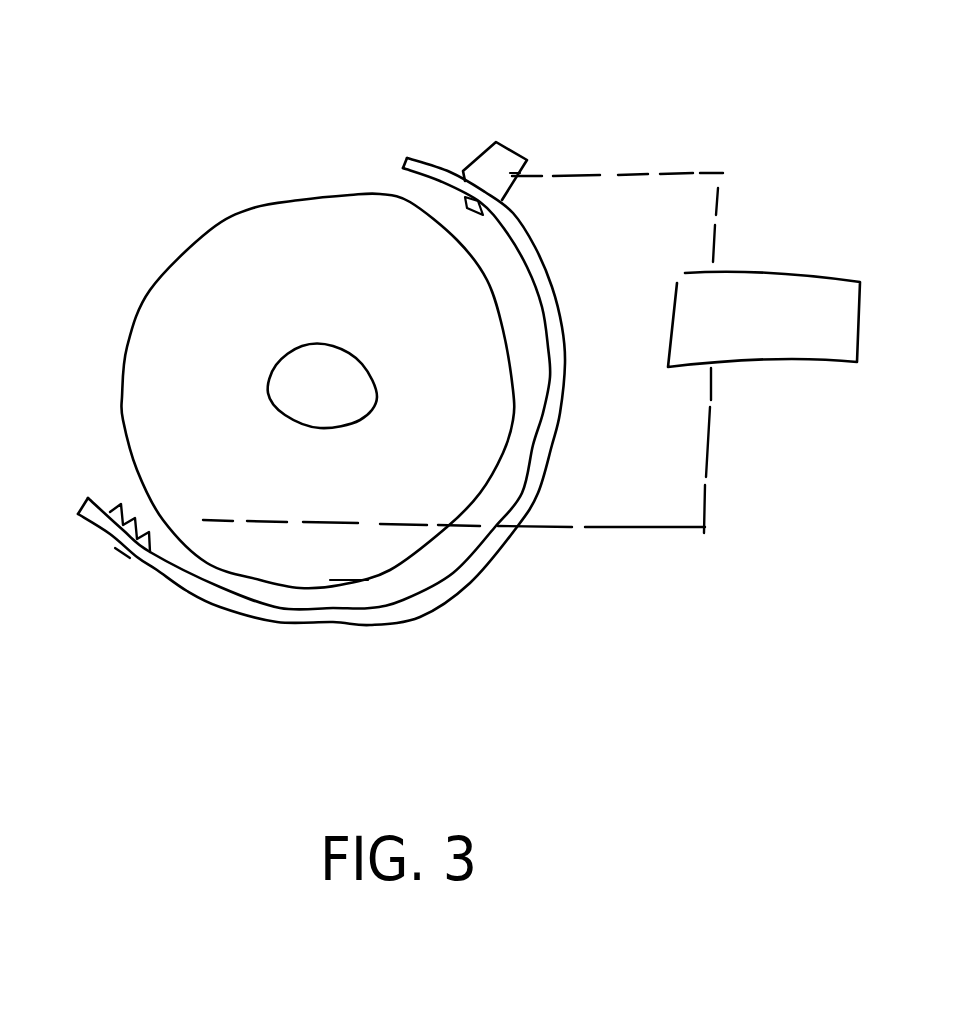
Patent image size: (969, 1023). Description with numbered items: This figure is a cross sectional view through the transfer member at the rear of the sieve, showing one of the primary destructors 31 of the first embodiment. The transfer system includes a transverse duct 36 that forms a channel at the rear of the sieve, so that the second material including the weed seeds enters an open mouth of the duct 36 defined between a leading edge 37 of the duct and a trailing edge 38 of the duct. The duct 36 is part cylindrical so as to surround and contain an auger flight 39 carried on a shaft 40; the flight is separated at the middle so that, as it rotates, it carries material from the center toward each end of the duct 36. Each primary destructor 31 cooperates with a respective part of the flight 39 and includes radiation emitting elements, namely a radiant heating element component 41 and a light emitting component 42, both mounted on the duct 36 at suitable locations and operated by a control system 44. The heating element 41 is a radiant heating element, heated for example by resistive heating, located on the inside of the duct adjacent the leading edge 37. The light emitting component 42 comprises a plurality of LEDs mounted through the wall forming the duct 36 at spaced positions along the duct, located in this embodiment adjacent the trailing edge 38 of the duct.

The primary destructor 31 is at (192, 219).
The transverse duct 36 is at (380, 602).
The leading edge 37 is at (82, 497).
The trailing edge 38 is at (423, 160).
The auger flight 39 is at (370, 203).
The shaft 40 is at (318, 372).
The radiant heating element component 41 is at (120, 507).
The light emitting component 42 is at (497, 162).
The control system 44 is at (825, 278).